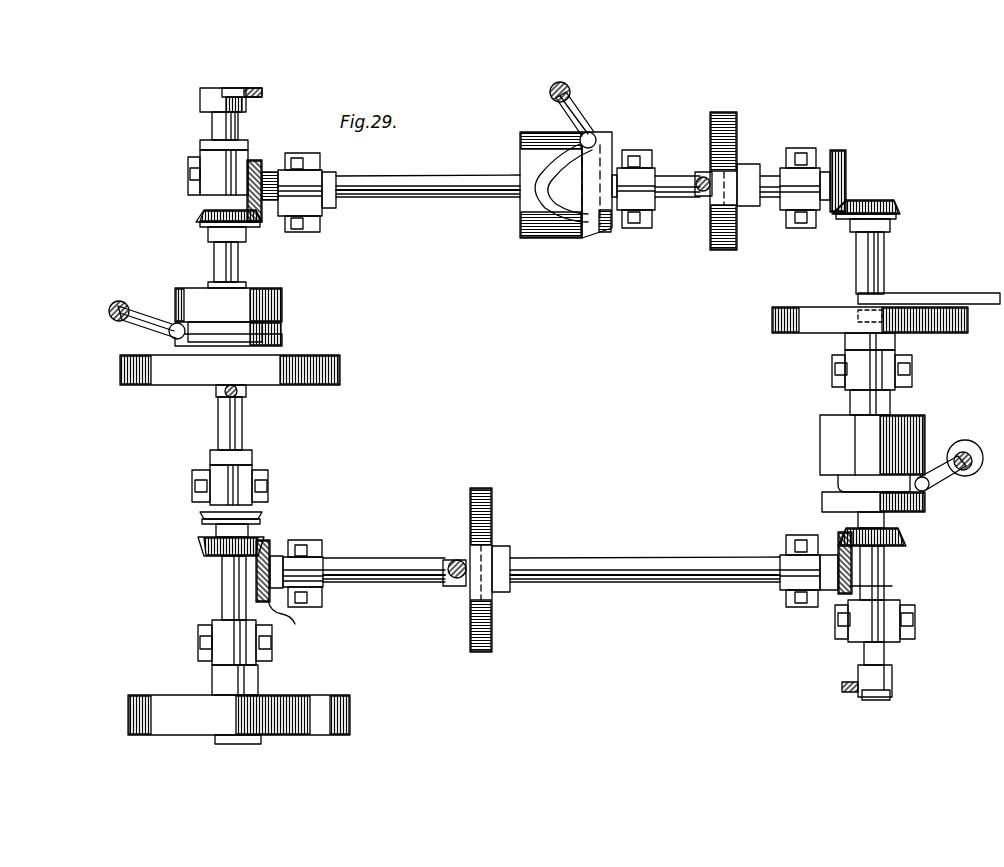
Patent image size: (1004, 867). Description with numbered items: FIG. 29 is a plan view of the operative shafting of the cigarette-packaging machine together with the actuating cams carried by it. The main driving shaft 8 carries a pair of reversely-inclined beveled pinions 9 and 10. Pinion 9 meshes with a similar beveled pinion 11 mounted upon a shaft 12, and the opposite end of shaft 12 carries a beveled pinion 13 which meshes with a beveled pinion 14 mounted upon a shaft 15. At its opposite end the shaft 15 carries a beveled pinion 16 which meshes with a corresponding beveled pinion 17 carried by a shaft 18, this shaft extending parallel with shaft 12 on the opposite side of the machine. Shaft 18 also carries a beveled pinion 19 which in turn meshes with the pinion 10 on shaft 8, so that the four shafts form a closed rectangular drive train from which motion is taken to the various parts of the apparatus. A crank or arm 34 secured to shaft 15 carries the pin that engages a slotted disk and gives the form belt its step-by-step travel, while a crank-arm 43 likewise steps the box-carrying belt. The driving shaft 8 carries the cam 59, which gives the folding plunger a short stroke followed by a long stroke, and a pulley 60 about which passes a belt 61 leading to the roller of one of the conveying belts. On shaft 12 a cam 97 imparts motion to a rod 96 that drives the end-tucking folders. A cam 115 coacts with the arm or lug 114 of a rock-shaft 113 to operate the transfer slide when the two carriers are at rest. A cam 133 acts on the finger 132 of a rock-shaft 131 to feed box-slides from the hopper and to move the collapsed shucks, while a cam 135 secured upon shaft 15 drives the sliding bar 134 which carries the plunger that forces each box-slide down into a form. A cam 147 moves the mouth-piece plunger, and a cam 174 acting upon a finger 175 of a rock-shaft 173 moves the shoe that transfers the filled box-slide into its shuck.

The main driving shaft 8 is at (228, 262).
The beveled pinion 9 is at (205, 548).
The beveled pinion 10 is at (200, 220).
The beveled pinion 11 is at (289, 624).
The shaft 12 is at (400, 574).
The beveled pinion 13 is at (840, 592).
The beveled pinion 14 is at (890, 545).
The shaft 15 is at (880, 272).
The beveled pinion 16 is at (896, 206).
The beveled pinion 17 is at (847, 182).
The shaft 18 is at (440, 186).
The beveled pinion 19 is at (256, 165).
The crank or arm 34 is at (854, 694).
The crank-arm 43 is at (250, 96).
The cam 59 is at (180, 378).
The pulley 60 is at (262, 514).
The belt 61 is at (202, 520).
The rod 96 is at (452, 585).
The cam 97 is at (488, 530).
The rock-shaft 113 is at (958, 474).
The arm or lug 114 is at (892, 493).
The cam 115 is at (834, 432).
The rock-shaft 131 is at (578, 102).
The arm or finger 132 is at (592, 133).
The cam 133 is at (532, 225).
The sliding bar 134 is at (940, 296).
The cam 135 is at (914, 330).
The cam 147 is at (722, 242).
The rock-shaft 173 is at (113, 320).
The cam 174 is at (252, 310).
The finger 175 is at (140, 318).